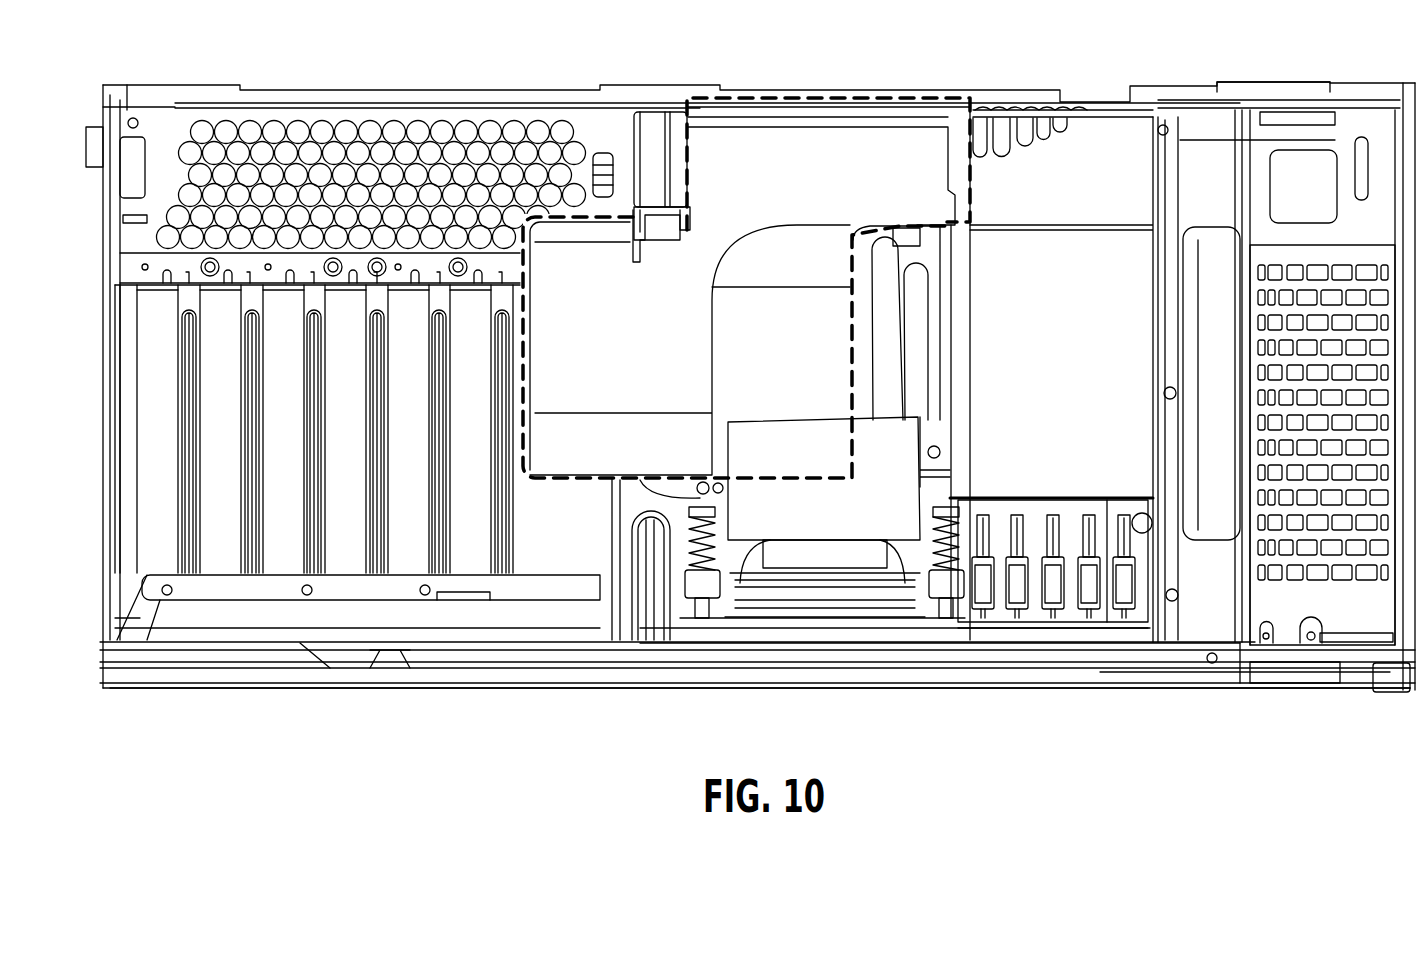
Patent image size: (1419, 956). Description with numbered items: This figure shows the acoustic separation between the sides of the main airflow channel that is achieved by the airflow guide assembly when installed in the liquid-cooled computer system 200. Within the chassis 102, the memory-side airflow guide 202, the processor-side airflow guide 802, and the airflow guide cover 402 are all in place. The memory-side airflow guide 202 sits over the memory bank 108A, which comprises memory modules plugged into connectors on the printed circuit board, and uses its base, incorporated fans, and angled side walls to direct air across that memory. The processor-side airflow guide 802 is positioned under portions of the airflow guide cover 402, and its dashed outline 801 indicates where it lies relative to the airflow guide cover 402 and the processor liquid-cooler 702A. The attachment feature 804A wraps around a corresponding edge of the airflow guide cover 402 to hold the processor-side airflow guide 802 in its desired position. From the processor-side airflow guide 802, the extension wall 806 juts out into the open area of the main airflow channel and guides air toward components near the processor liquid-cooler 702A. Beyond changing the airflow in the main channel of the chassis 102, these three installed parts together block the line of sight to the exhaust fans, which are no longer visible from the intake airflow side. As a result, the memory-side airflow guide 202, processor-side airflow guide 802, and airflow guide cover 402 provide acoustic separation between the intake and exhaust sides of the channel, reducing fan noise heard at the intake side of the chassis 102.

The chassis 102 is at (1101, 684).
The memory bank 108A is at (1115, 486).
The computer system 200 is at (913, 742).
The memory-side airflow guide 202 is at (1073, 417).
The airflow guide cover 402 is at (1062, 156).
The processor liquid-cooler 702A is at (843, 520).
The outline 801 is at (600, 478).
The processor-side airflow guide 802 is at (524, 403).
The attachment feature 804A is at (806, 102).
The extension wall 806 is at (616, 354).